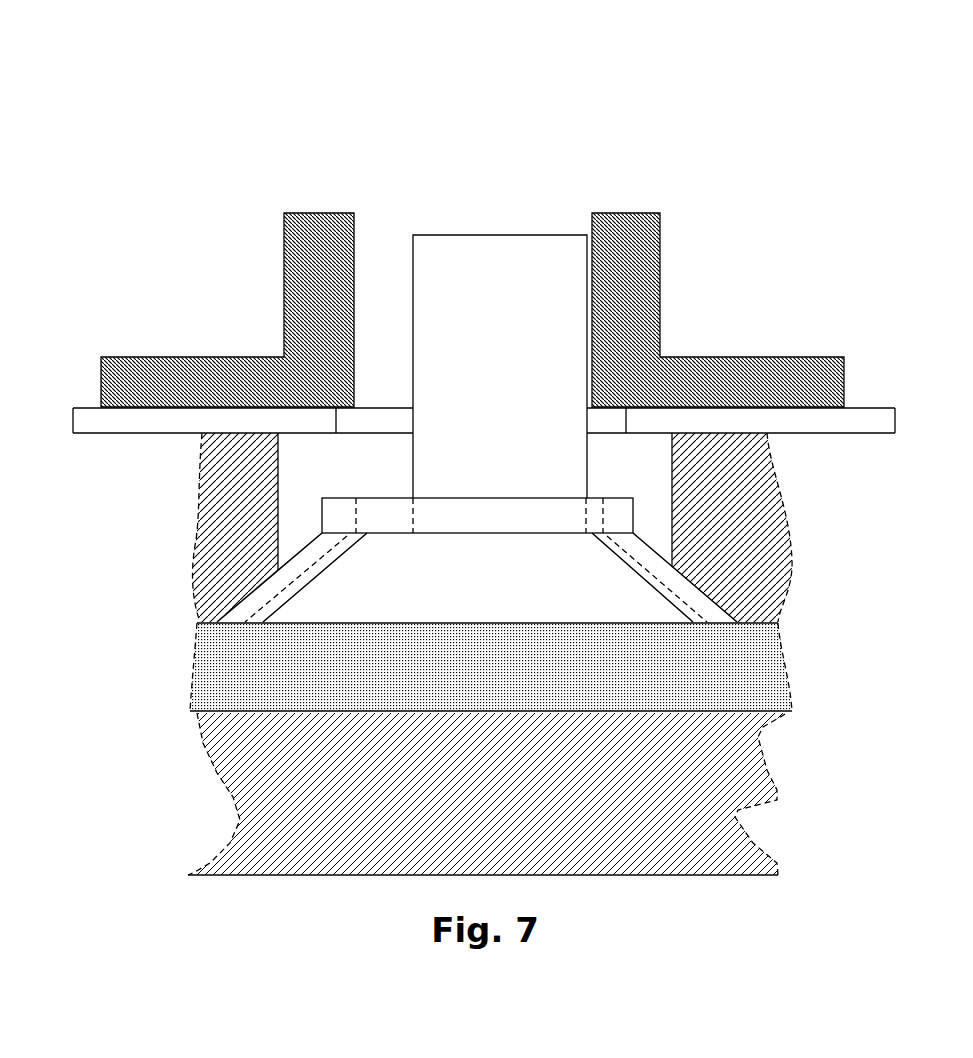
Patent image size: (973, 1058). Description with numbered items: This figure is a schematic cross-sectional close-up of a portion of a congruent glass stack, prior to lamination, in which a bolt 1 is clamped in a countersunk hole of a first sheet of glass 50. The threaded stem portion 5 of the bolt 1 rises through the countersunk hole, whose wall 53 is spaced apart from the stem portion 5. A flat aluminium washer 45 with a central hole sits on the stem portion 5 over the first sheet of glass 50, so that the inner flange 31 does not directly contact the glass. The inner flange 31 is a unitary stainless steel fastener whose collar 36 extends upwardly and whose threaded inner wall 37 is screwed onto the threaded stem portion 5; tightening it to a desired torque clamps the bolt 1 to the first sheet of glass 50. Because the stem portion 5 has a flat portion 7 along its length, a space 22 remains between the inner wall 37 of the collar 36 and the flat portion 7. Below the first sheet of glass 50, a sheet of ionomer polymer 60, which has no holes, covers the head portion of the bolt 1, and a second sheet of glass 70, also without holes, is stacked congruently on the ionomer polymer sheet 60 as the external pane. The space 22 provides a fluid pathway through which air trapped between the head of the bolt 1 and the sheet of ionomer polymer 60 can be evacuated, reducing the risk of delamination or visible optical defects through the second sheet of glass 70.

The bolt 1 is at (499, 205).
The threaded stem portion 5 is at (535, 253).
The flat portion 7 is at (402, 258).
The space 22 is at (388, 207).
The inner flange 31 is at (700, 318).
The collar 36 is at (316, 278).
The threaded inner wall 37 is at (355, 258).
The washer 45 is at (878, 415).
The first sheet of glass 50 is at (730, 493).
The wall 53 is at (267, 490).
The sheet of ionomer polymer 60 is at (750, 682).
The second sheet of glass 70 is at (257, 780).